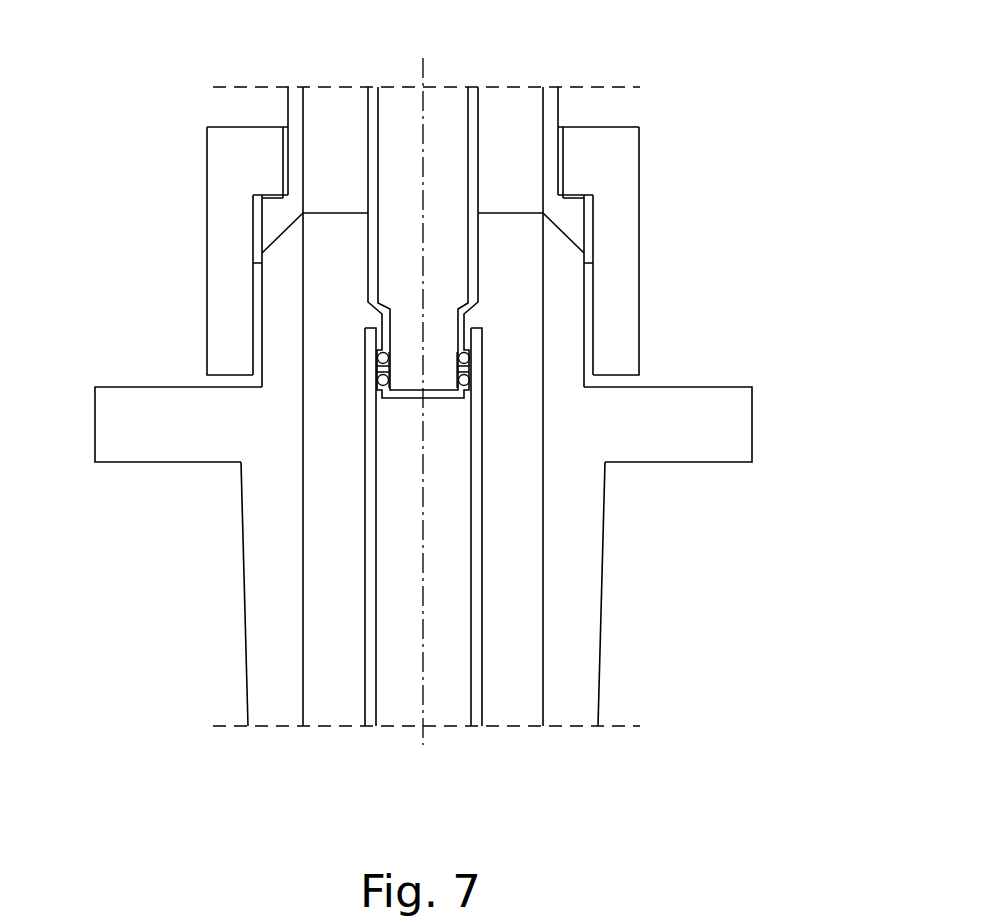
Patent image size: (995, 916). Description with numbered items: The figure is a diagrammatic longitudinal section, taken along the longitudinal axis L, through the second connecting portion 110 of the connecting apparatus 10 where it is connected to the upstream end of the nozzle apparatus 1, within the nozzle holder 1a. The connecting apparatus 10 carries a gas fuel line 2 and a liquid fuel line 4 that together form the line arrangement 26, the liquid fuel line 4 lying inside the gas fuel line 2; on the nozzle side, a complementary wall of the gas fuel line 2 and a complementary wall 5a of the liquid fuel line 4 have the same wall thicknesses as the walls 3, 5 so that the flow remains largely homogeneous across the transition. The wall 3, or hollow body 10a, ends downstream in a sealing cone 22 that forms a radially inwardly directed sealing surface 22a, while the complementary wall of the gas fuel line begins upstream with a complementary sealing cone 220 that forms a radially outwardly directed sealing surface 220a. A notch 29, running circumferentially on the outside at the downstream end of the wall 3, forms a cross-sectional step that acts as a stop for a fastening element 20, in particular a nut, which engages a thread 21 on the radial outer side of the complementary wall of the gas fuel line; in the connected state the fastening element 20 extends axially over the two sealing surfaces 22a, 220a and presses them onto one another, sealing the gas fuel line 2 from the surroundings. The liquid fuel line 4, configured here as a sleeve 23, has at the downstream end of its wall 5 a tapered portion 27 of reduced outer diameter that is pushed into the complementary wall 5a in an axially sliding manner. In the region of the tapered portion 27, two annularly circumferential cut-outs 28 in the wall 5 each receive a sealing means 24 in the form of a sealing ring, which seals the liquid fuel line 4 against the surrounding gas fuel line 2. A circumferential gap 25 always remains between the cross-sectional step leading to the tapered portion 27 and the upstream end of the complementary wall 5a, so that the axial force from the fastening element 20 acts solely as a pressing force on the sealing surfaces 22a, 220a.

The nozzle apparatus 1 is at (438, 528).
The nozzle holder 1a is at (517, 547).
The gas fuel line 2 is at (516, 90).
The wall 3 is at (600, 100).
The hollow body 10a is at (552, 100).
The liquid fuel line 4 is at (393, 100).
The wall 5 is at (470, 140).
The complementary wall 5a is at (373, 467).
The connecting apparatus 10 is at (179, 141).
The second connecting portion 110 is at (290, 93).
The fastening element 20 is at (618, 183).
The thread 21 is at (252, 308).
The sealing cone 22 is at (325, 235).
The sealing surface 22a is at (290, 214).
The complementary sealing cone 220 is at (317, 285).
The sealing surface 220a is at (250, 250).
The sleeve 23 is at (472, 100).
The sealing means 24 is at (472, 358).
The circumferential gap 25 is at (373, 323).
The line arrangement 26 is at (333, 92).
The tapered portion 27 is at (375, 343).
The cut-outs 28 is at (467, 345).
The notch 29 is at (572, 192).
The longitudinal axis L is at (418, 735).